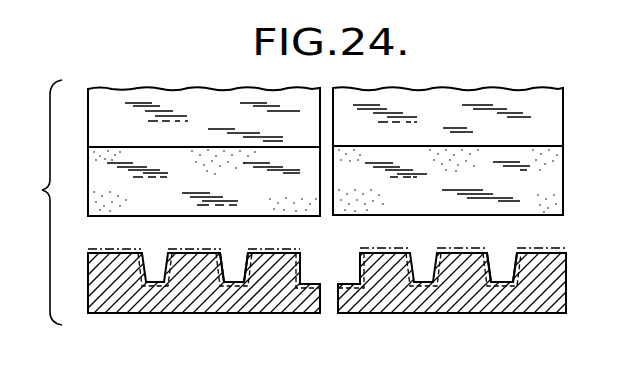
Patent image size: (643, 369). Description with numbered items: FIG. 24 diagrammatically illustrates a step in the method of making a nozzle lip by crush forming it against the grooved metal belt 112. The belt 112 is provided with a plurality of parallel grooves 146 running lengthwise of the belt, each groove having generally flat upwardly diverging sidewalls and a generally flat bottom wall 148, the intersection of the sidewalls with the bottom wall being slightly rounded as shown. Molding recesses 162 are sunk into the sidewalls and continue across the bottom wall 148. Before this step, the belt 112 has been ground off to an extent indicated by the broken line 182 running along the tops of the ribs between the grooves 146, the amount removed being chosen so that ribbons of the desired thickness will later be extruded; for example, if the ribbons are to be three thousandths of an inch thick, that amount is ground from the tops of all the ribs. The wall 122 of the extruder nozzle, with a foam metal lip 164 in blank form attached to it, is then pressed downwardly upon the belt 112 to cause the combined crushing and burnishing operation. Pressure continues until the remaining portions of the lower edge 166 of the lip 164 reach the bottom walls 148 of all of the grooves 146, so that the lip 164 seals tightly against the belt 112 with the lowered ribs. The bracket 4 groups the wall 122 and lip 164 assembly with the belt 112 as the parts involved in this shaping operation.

The laminate assembly 4 is at (31, 202).
The belt 112 is at (200, 300).
The wall 122 is at (548, 130).
The grooves 146 is at (235, 258).
The bottom wall 148 is at (420, 283).
The molding recesses 162 is at (517, 276).
The lip 164 is at (548, 186).
The lower edge 166 is at (376, 218).
The broken line 182 is at (195, 248).